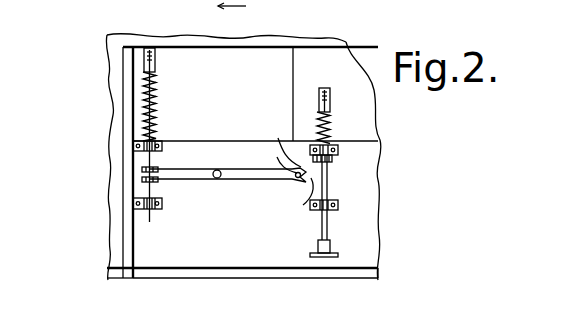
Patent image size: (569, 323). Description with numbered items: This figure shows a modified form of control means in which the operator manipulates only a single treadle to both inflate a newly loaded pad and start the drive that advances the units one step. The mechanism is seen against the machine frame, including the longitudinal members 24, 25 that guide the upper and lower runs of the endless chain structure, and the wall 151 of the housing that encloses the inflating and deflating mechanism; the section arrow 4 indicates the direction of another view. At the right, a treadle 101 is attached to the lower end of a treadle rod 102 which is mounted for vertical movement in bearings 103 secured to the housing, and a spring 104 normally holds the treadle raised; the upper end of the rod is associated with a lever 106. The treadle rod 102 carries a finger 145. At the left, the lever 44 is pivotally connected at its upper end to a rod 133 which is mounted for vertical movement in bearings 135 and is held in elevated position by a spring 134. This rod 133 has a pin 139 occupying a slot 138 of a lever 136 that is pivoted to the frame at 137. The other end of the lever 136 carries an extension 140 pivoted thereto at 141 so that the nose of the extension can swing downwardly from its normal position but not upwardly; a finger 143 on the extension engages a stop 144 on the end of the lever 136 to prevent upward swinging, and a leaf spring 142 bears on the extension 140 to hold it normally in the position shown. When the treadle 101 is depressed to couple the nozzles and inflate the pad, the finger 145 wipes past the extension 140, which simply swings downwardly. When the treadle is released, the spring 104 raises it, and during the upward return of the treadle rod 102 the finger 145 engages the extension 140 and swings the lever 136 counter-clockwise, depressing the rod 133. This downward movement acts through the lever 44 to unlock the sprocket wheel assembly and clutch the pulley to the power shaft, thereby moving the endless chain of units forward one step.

The section view direction arrow 4 is at (232, 16).
The longitudinal member 24 is at (241, 48).
The longitudinal member 25 is at (238, 141).
The lever 44 is at (153, 62).
The treadle 101 is at (332, 253).
The treadle rod 102 is at (330, 223).
The bearings 103 is at (339, 150).
The spring 104 is at (335, 122).
The lever 106 is at (323, 87).
The rod 133 is at (151, 190).
The spring 134 is at (157, 108).
The bearings 135 is at (139, 148).
The lever 136 is at (237, 179).
The pivot 137 is at (217, 170).
The slot 138 is at (156, 169).
The pin 139 is at (154, 180).
The extension 140 is at (295, 199).
The pivot 141 is at (276, 155).
The leaf spring 142 is at (297, 183).
The finger 143 is at (311, 152).
The stop 144 is at (283, 141).
The finger 145 is at (328, 176).
The wall 151 is at (292, 85).